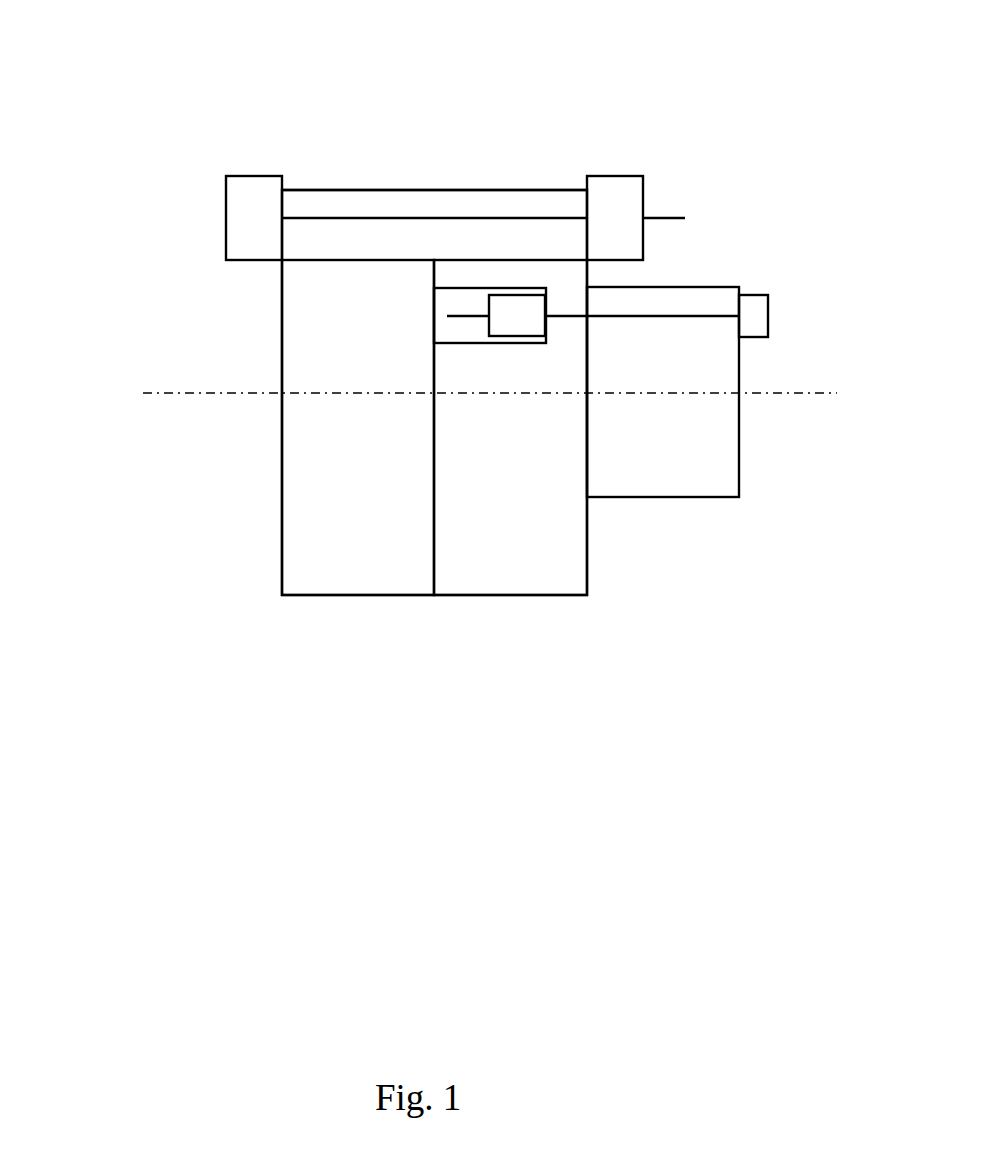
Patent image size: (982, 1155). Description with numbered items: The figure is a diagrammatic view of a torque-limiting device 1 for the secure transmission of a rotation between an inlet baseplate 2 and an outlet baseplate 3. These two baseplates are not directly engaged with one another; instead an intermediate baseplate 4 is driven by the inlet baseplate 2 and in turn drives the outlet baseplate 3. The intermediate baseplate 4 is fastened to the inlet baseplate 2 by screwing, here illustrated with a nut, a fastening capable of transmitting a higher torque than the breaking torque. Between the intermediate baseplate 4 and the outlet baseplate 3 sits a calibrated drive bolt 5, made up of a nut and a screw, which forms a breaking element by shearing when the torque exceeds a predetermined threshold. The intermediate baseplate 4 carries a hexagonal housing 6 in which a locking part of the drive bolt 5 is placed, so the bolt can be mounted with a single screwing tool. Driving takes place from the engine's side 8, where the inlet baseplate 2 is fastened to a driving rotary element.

The torque-limiting device 1 is at (197, 818).
The inlet baseplate 2 is at (323, 552).
The outlet baseplate 3 is at (697, 480).
The intermediate baseplate 4 is at (501, 533).
The drive bolt 5 is at (785, 303).
The hexagonal housing 6 is at (465, 300).
The engine's side 8 is at (73, 125).